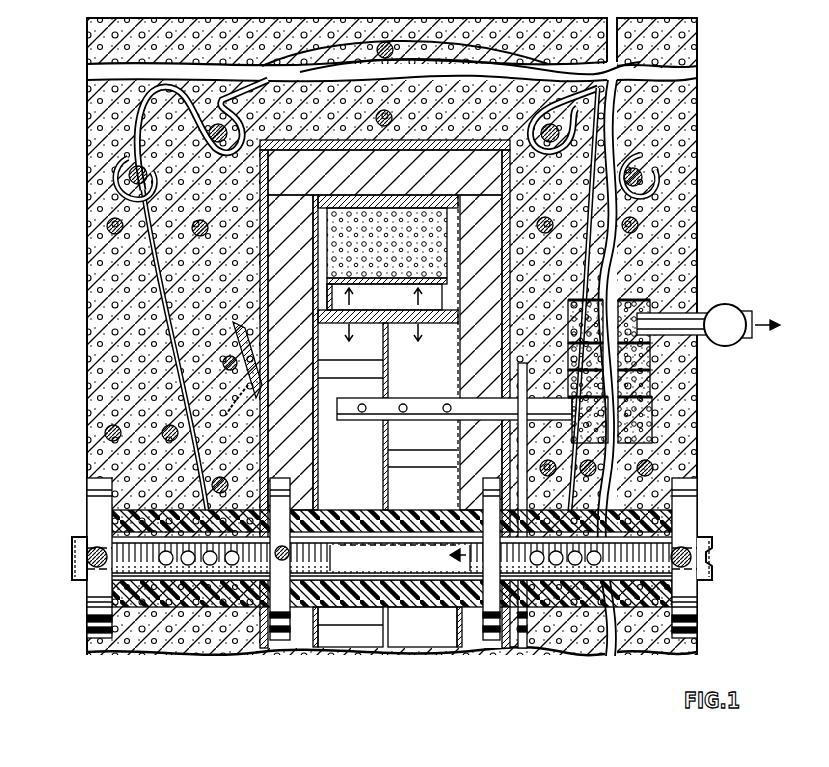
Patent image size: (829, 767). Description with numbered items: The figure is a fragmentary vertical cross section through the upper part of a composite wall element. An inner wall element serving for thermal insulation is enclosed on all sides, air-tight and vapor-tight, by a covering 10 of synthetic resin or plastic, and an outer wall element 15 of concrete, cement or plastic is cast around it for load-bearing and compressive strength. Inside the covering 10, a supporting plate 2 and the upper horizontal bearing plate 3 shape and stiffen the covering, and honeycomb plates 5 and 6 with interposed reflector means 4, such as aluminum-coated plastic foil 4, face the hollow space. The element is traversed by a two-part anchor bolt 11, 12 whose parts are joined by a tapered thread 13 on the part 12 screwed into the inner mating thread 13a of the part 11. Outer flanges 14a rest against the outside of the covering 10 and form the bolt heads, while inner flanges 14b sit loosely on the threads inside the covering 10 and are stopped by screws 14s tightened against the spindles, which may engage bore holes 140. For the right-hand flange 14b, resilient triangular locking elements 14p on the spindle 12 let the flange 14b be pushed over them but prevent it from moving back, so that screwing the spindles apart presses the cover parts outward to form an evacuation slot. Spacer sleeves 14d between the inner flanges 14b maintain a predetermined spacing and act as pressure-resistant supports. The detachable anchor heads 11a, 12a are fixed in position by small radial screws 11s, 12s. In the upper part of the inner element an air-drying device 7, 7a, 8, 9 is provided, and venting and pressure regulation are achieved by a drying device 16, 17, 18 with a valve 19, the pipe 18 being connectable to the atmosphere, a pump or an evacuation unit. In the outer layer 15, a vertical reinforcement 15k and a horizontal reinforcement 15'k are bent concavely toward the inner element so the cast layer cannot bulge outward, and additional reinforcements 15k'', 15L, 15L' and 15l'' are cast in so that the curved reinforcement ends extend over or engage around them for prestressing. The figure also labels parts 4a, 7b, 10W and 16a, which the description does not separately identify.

The plate 2 is at (478, 654).
The upper horizontal bearing plate 3 is at (376, 186).
The reflective foil 4 is at (282, 644).
The chambers 4a is at (432, 332).
The honeycomb plate 5 is at (340, 374).
The honeycomb plate 6 is at (402, 464).
The air-drying device 7 is at (438, 228).
The air-drying device part 7a is at (318, 335).
The lower wall portion 7b is at (298, 652).
The air-drying device part 8 is at (330, 295).
The air-drying device part 9 is at (332, 227).
The covering 10 is at (304, 148).
The wedge 10W is at (246, 345).
The anchor bolt part 11 is at (74, 555).
The anchor head 11a is at (98, 605).
The small radial screw 11s is at (85, 562).
The anchor bolt part 12 is at (702, 562).
The anchor head 12a is at (686, 520).
The small radial screw 12s is at (690, 584).
The tapered thread 13 is at (394, 522).
The inner mating thread 13a is at (332, 526).
The outer flange 14a is at (237, 647).
The inner flange 14b is at (307, 657).
The spacer sleeve 14d is at (420, 526).
The resilient triangular locking element 14p is at (450, 557).
The screw 14s is at (387, 627).
The bore hole 140 is at (592, 657).
The outer wall element 15 is at (394, 387).
The vertical reinforcement 15k is at (318, 295).
The additional reinforcement 15k'' is at (294, 118).
The additional reinforcement 15l'' is at (386, 177).
The horizontal reinforcement 15'k is at (384, 301).
The additional reinforcement 15L is at (363, 46).
The additional reinforcement 15L' is at (589, 43).
The drying device part 16 is at (486, 420).
The vertical rod 16a is at (524, 442).
The drying device part 17 is at (692, 292).
The pipe 18 is at (704, 314).
The valve 19 is at (727, 348).